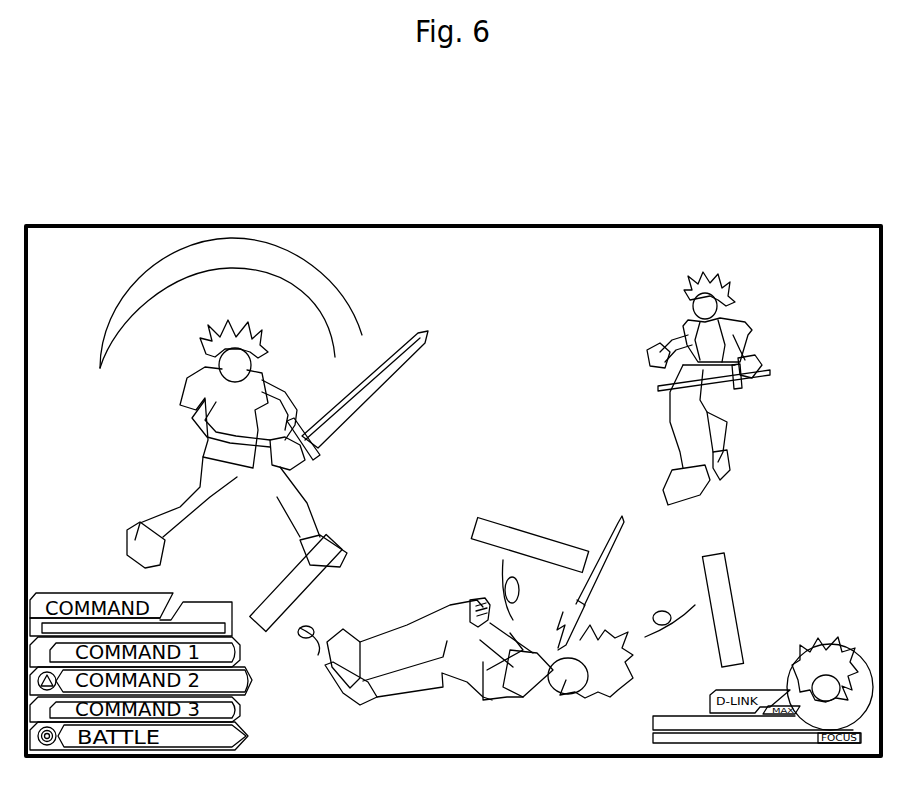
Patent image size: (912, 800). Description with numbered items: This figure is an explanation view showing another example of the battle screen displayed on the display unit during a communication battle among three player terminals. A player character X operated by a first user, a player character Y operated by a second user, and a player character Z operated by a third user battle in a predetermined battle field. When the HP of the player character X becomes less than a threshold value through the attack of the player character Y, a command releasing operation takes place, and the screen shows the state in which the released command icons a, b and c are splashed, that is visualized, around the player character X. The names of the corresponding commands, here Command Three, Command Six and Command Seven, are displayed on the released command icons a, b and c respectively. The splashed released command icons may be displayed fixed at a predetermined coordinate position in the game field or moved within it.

The player character X is at (523, 707).
The player character Y is at (178, 427).
The player character Z is at (763, 347).
The released command icon a is at (520, 527).
The released command icon b is at (730, 585).
The released command icon c is at (267, 598).